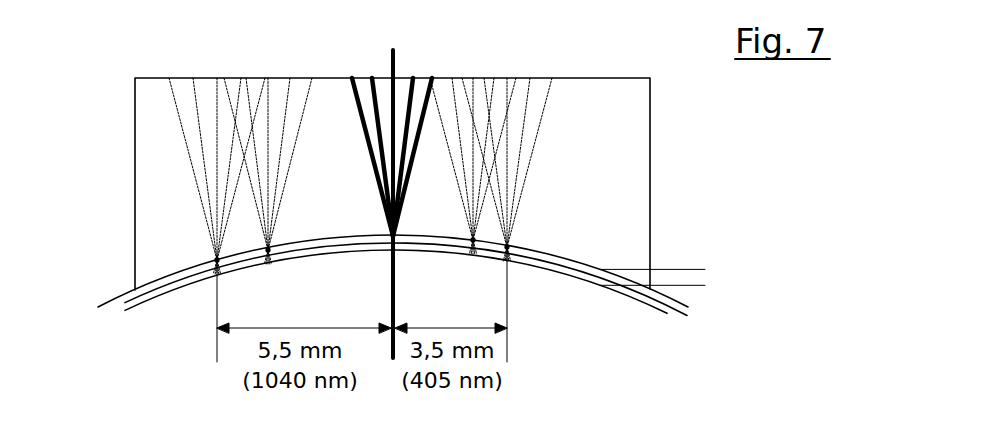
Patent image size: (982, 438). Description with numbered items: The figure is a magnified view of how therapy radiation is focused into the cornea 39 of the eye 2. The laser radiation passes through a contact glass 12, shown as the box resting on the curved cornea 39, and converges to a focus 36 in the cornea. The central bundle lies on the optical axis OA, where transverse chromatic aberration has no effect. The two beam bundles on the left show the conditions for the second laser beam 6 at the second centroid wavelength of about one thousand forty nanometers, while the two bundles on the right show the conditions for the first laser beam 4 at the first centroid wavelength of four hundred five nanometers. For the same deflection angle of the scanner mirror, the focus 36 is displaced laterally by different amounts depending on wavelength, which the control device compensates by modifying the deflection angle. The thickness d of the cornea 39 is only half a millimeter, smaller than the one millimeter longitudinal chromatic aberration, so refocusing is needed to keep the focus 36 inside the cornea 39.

The eye 2 is at (578, 341).
The first laser beam 4 is at (536, 112).
The second laser beam 6 is at (188, 140).
The contact glass 12 is at (630, 168).
The focus 36 is at (388, 243).
The cornea 39 is at (125, 308).
The optical axis OA is at (397, 62).
The thickness of the cornea d is at (667, 277).